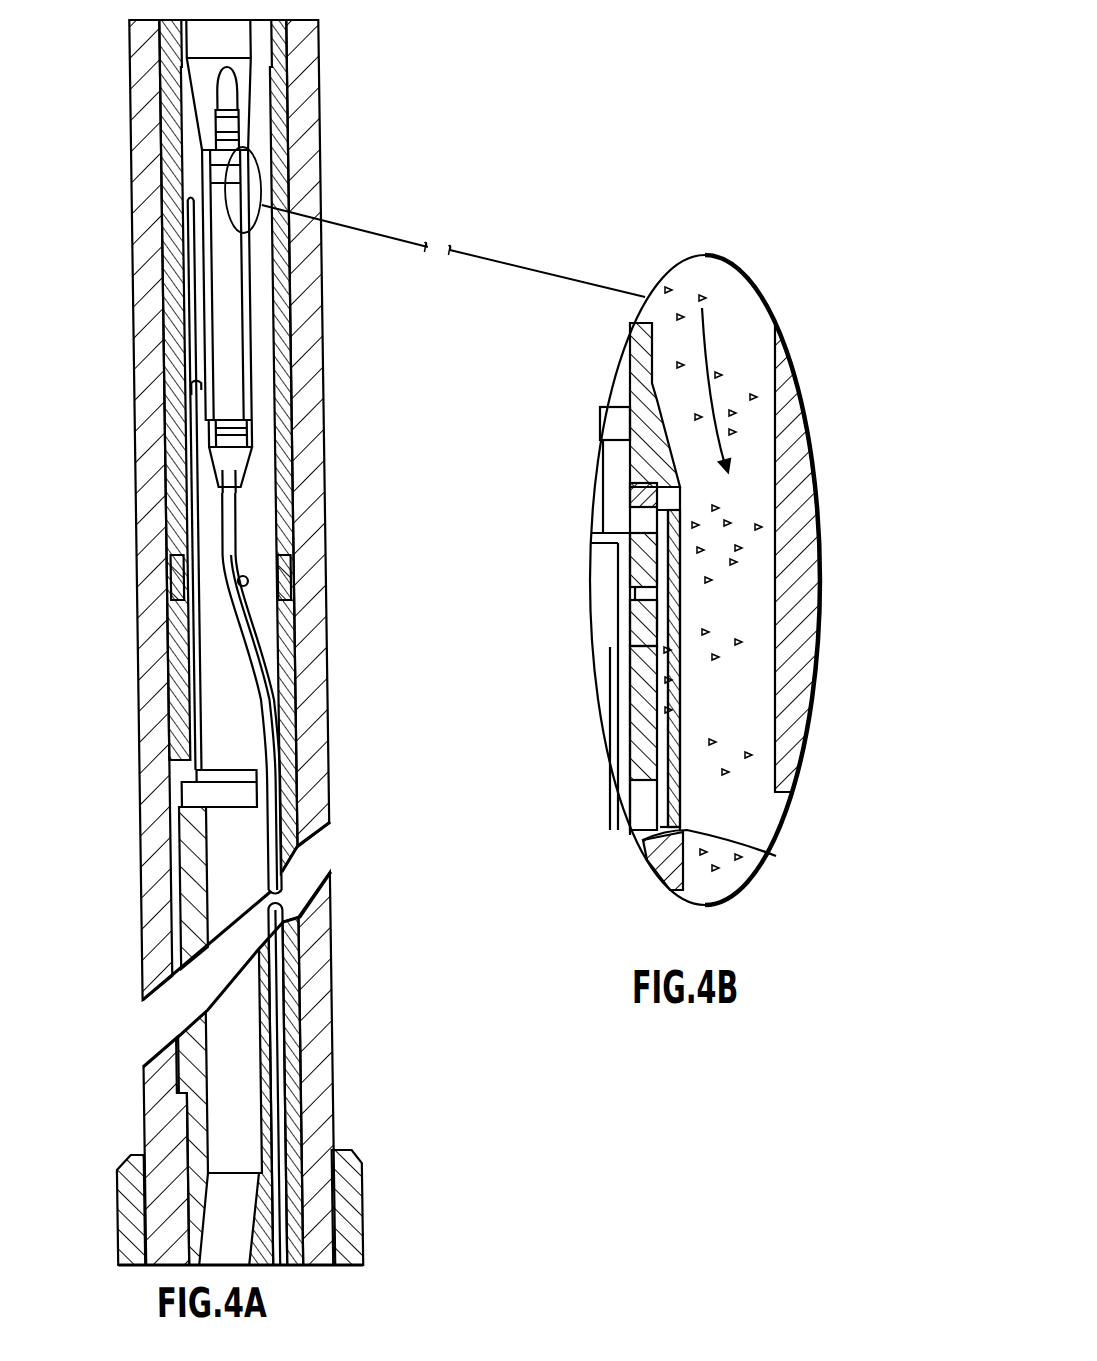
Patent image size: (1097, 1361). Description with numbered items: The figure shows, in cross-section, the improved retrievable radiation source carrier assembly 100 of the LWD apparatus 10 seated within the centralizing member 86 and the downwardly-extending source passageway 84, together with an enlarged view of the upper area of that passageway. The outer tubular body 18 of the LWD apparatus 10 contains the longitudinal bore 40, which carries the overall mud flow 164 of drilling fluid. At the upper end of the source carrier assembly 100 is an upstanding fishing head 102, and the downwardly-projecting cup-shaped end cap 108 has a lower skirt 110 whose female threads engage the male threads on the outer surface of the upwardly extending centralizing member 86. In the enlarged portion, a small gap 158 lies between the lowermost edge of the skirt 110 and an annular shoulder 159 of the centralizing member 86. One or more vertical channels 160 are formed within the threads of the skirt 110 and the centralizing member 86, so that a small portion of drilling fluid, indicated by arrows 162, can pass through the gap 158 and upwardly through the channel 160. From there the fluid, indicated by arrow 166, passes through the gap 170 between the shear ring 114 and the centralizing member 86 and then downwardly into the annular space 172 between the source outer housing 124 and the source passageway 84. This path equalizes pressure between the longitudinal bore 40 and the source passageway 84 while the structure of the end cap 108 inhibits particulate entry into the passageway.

In FIG. 4A, the LWD apparatus 10 is at (326, 722).
In FIG. 4A, the outer tubular body 18 is at (302, 350).
In FIG. 4B, the outer tubular body 18 is at (785, 437).
In FIG. 4A, the longitudinal bore 40 is at (191, 390).
In FIG. 4B, the longitudinal bore 40 is at (773, 507).
In FIG. 4A, the source passageway 84 is at (240, 578).
In FIG. 4A, the centralizing member 86 is at (190, 252).
In FIG. 4B, the centralizing member 86 is at (613, 777).
In FIG. 4A, the retrievable radiation source carrier assembly 100 is at (236, 703).
In FIG. 4A, the fishing head 102 is at (226, 123).
In FIG. 4A, the end cap 108 is at (213, 173).
In FIG. 4B, the end cap 108 is at (633, 377).
In FIG. 4B, the skirt 110 is at (680, 623).
In FIG. 4B, the shear ring 114 is at (630, 533).
In FIG. 4A, the source outer housing 124 is at (215, 321).
In FIG. 4B, the source outer housing 124 is at (623, 713).
In FIG. 4B, the gap 158 is at (767, 848).
In FIG. 4B, the annular shoulder 159 is at (645, 840).
In FIG. 4B, the vertical channel 160 is at (677, 687).
In FIG. 4B, the arrows 162 is at (693, 822).
In FIG. 4B, the overall mud flow 164 is at (703, 338).
In FIG. 4B, the arrow 166 is at (667, 607).
In FIG. 4B, the gap 170 is at (637, 577).
In FIG. 4B, the annular space 172 is at (643, 662).